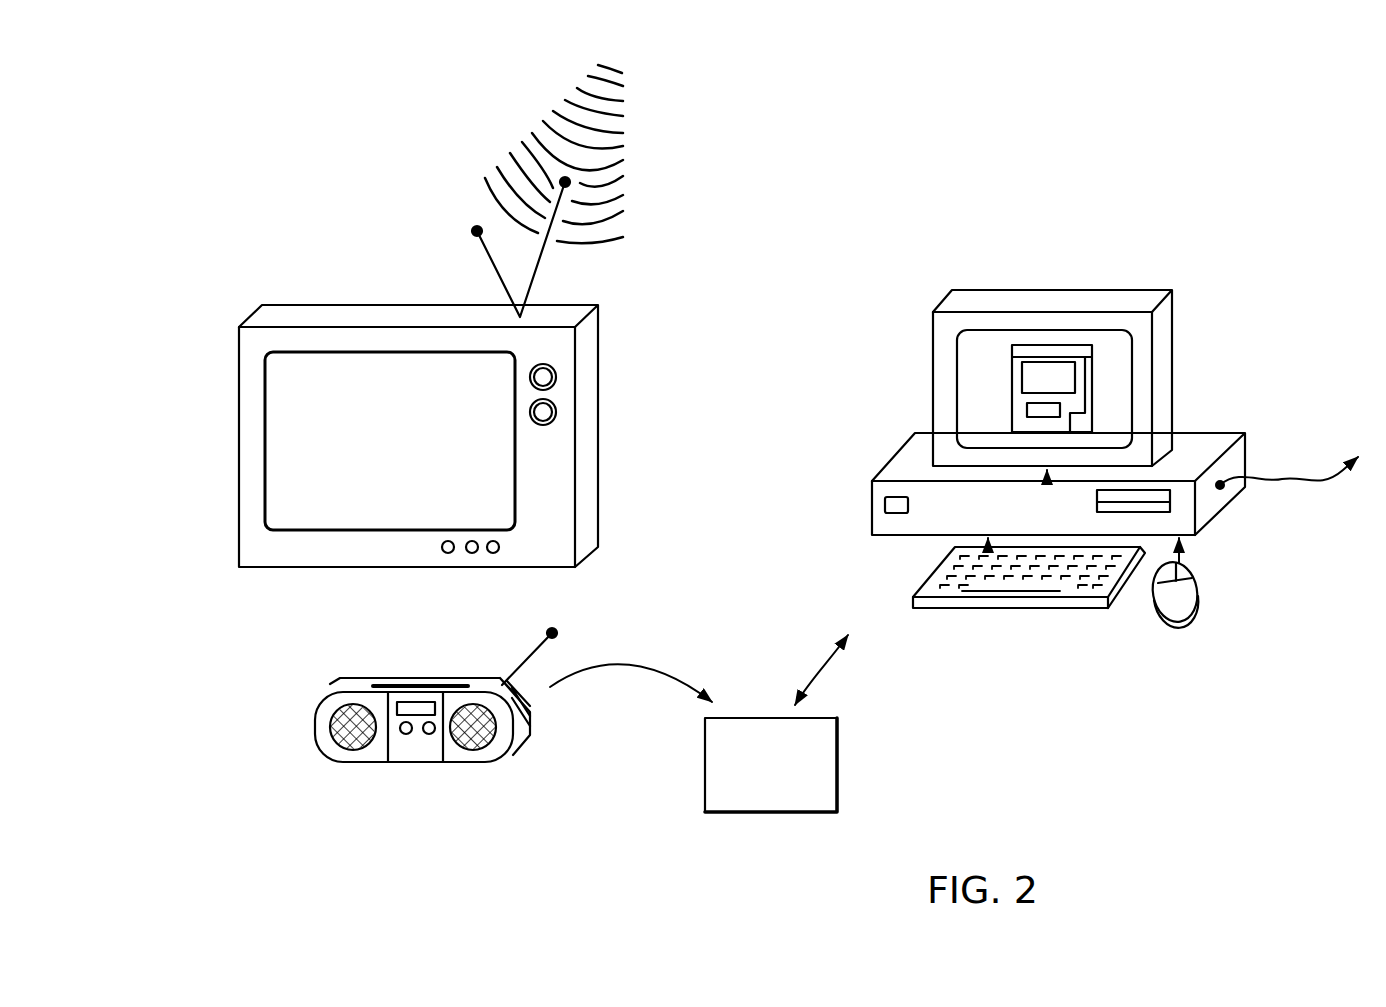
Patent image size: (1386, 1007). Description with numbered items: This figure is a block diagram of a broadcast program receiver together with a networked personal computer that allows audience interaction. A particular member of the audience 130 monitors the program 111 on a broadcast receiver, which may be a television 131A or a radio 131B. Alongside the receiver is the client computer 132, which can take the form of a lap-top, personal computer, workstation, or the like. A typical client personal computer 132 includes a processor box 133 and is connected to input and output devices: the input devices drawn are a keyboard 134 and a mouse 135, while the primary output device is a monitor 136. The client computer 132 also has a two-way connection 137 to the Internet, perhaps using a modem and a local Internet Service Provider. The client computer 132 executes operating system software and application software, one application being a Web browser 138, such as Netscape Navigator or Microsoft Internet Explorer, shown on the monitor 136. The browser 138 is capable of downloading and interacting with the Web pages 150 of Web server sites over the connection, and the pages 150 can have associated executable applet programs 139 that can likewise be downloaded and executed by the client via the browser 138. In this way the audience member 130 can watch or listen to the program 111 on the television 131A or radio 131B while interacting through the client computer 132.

The program 111 is at (300, 415).
The member of the audience 130 is at (800, 780).
The television 131A is at (379, 396).
The radio 131B is at (483, 678).
The client computer 132 is at (912, 364).
The processor box 133 is at (870, 505).
The keyboard 134 is at (983, 610).
The mouse 135 is at (1195, 607).
The monitor 136 is at (1059, 355).
The two-way connection 137 is at (1280, 478).
The Web browser 138 is at (1095, 387).
The applet programs 139 is at (1025, 410).
The Web pages 150 is at (1059, 381).